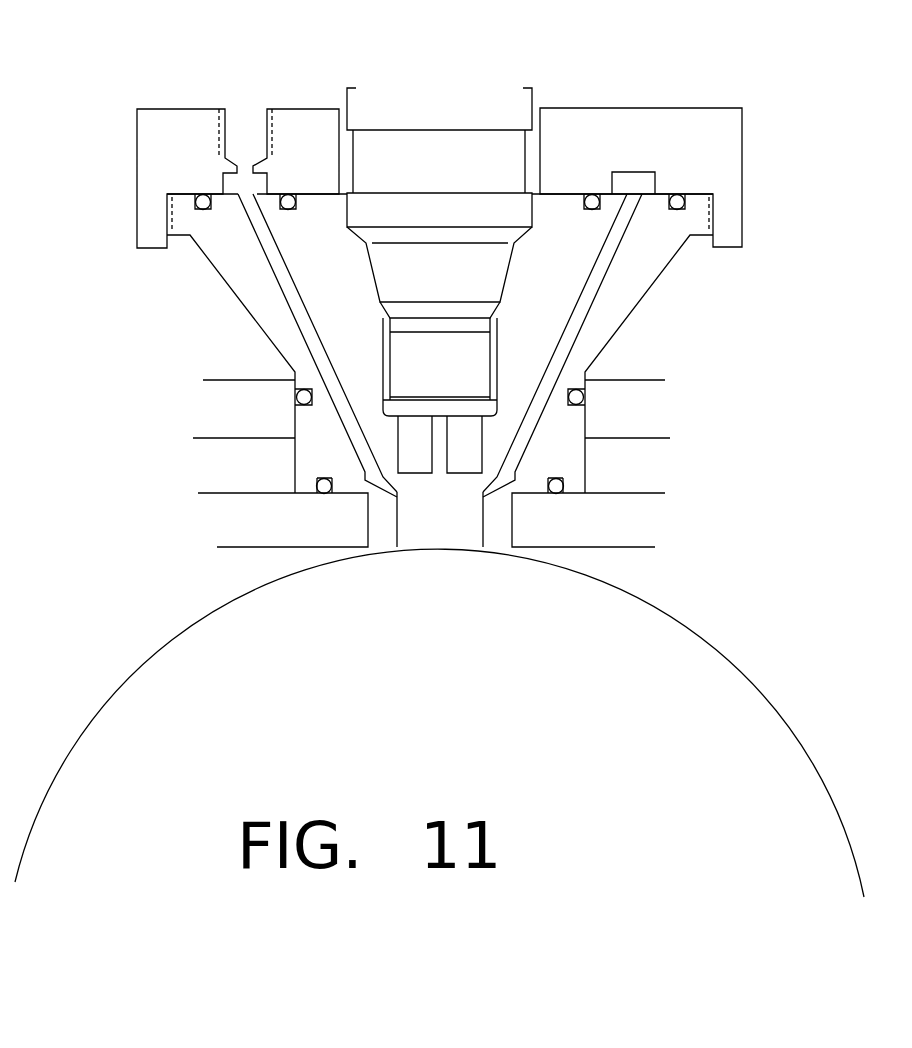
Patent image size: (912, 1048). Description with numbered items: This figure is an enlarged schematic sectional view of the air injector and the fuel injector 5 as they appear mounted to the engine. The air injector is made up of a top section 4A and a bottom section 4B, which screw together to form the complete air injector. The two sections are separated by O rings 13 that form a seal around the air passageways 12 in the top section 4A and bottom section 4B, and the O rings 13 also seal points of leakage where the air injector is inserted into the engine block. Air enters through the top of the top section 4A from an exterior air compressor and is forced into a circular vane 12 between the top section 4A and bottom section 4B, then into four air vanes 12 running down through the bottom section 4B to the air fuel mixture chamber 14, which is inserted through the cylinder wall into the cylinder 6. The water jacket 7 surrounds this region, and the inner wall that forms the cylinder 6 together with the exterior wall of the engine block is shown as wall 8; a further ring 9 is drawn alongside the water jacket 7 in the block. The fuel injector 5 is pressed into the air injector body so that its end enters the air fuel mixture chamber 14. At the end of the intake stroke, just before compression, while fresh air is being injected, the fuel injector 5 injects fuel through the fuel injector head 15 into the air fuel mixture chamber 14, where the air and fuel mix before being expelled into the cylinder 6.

The top section of air injector 4A is at (157, 162).
The bottom section of air injector 4B is at (185, 220).
The fuel injector 5 is at (475, 88).
The cylinder 6 is at (568, 707).
The water jacket 7 is at (213, 464).
The engine block wall 8 is at (230, 518).
The retaining ring 9 is at (237, 392).
The air vane 12 is at (245, 122).
The O rings 13 is at (210, 212).
The air fuel mixture chamber 14 is at (455, 527).
The fuel injector head 15 is at (440, 457).